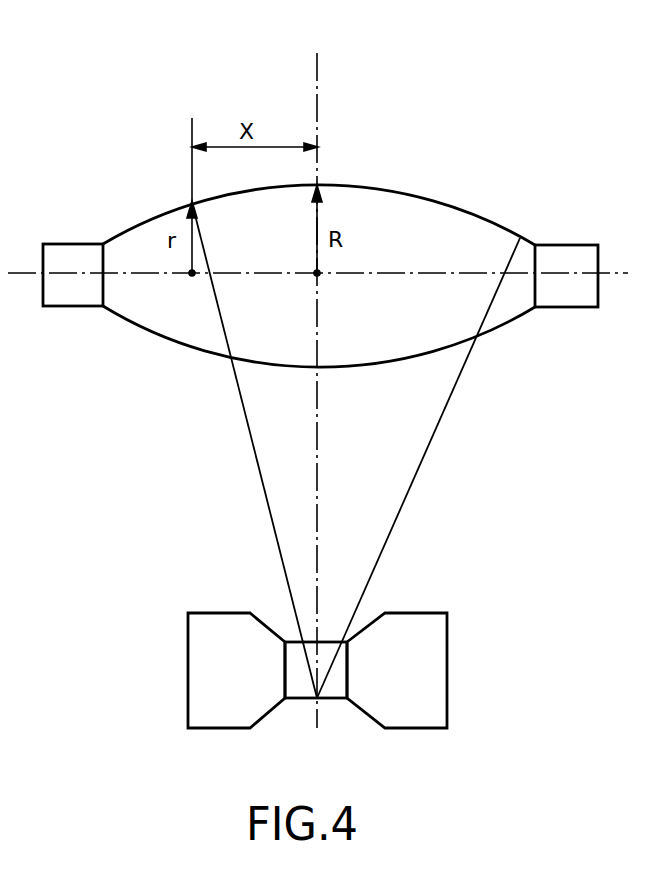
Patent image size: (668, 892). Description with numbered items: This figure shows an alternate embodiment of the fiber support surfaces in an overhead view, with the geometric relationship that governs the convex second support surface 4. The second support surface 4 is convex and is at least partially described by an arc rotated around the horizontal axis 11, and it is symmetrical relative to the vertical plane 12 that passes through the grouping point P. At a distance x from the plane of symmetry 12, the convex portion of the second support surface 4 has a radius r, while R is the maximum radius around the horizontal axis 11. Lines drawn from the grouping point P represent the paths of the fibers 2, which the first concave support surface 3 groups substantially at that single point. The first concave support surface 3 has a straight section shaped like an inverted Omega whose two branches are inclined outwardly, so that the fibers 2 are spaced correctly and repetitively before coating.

The fibers 2 is at (252, 449).
The first concave support surface 3 is at (338, 712).
The second convex support surface 4 is at (423, 194).
The horizontal axis 11 is at (613, 273).
The vertical plane of symmetry 12 is at (319, 75).